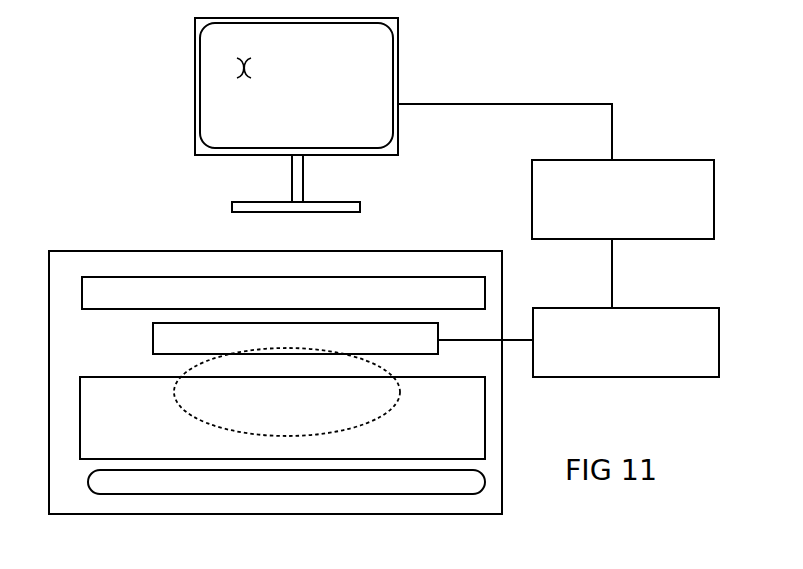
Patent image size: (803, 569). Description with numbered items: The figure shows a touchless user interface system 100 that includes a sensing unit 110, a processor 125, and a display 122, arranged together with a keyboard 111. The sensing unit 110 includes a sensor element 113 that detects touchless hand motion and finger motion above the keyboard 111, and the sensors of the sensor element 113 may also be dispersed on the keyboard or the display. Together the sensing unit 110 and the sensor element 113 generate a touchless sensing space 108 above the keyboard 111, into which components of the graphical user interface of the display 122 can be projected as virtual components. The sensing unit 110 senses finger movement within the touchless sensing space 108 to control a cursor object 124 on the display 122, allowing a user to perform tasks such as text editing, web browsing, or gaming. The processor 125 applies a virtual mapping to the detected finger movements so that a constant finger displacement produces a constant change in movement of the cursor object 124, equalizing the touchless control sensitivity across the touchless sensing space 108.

The touchless user interface system 100 is at (583, 28).
The display 122 is at (398, 157).
The cursor object 124 is at (250, 80).
The processor 125 is at (663, 160).
The sensing unit 110 is at (669, 308).
The keyboard 111 is at (98, 251).
The sensor element 113 is at (153, 338).
The touchless sensing space 108 is at (398, 395).